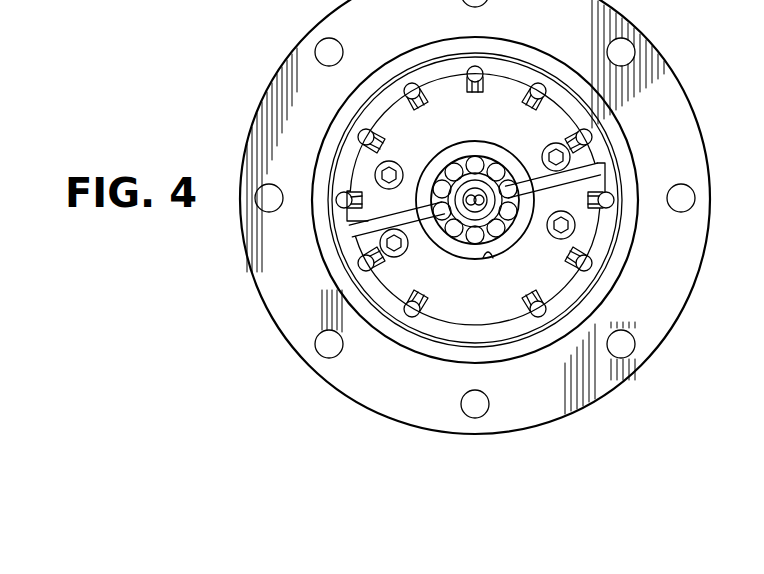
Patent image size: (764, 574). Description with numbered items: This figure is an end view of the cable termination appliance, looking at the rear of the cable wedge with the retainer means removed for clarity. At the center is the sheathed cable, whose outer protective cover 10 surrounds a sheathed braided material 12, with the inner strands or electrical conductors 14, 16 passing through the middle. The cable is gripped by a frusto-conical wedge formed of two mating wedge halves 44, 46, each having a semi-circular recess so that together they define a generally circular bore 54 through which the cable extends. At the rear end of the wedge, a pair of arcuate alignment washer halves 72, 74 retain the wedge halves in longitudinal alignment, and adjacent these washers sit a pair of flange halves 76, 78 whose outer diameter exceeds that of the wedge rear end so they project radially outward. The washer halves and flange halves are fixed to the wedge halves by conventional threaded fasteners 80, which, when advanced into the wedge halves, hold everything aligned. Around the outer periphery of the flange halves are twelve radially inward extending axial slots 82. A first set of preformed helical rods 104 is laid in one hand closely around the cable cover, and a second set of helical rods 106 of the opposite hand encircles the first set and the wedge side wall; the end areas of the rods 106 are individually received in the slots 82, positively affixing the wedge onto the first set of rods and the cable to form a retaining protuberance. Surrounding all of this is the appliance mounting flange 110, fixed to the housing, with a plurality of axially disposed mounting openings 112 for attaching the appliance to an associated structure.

The outer protective cover 10 is at (494, 178).
The sheathed braided material 12 is at (478, 172).
The inner strand or electrical conductor 14 is at (506, 214).
The inner strand or electrical conductor 16 is at (454, 190).
The wedge half 44 is at (470, 162).
The wedge half 46 is at (498, 238).
The circular bore 54 is at (490, 258).
The arcuate alignment washer half 72 is at (480, 152).
The arcuate alignment washer half 74 is at (462, 246).
The flange half 76 is at (489, 80).
The flange half 78 is at (592, 233).
The threaded fastener 80 is at (375, 174).
The axial slot 82 is at (547, 97).
The first set of preformed helical rods 104 is at (452, 240).
The second set of preformed helical rods 106 is at (361, 269).
The appliance mounting flange 110 is at (668, 310).
The mounting opening 112 is at (614, 341).